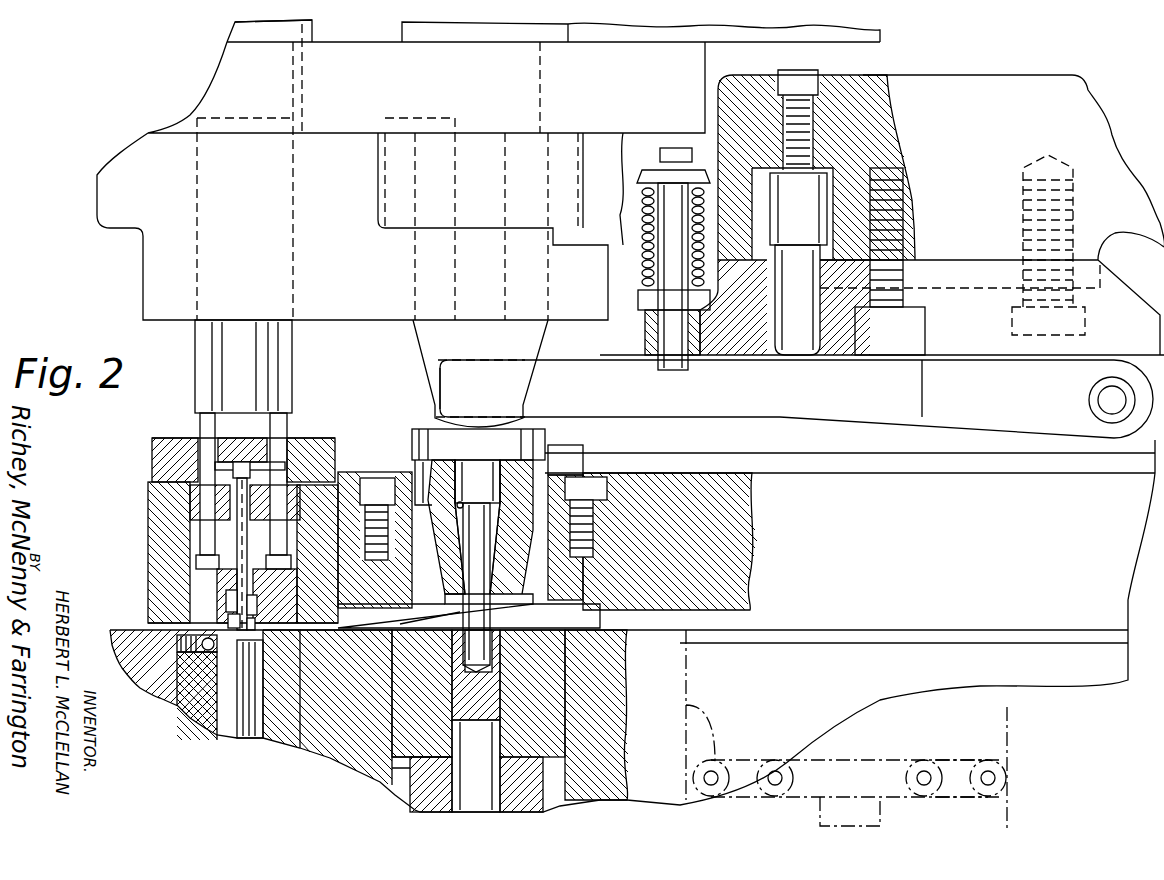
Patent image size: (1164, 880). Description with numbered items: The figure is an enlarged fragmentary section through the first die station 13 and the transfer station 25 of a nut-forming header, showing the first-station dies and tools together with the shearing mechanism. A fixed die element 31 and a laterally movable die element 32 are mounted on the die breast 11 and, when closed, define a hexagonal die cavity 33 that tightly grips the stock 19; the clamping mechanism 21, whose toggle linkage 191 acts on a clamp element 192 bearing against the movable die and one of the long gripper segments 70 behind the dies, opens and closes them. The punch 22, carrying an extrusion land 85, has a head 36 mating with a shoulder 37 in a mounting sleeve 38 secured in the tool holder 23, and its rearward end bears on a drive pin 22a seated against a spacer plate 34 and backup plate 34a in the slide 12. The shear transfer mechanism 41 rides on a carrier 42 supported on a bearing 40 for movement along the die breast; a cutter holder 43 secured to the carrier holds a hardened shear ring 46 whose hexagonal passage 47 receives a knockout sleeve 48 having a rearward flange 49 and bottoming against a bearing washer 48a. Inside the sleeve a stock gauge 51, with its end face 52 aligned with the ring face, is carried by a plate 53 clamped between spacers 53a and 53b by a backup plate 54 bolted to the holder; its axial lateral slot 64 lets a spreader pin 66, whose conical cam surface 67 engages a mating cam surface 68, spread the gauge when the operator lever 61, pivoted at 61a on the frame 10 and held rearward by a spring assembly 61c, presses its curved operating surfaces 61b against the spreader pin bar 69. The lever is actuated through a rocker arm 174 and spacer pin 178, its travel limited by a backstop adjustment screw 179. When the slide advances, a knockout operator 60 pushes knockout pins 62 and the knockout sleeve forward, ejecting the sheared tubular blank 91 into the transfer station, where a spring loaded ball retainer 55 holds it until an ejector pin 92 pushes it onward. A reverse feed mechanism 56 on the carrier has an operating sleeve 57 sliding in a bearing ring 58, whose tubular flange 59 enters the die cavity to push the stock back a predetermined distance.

The frame 10 is at (1088, 102).
The die breast 11 is at (120, 619).
The slide 12 is at (733, 50).
The first die station 13 is at (533, 625).
The stock 19 is at (470, 805).
The clamping mechanism 21 is at (875, 748).
The punch 22 is at (490, 546).
The drive pin 22a is at (470, 468).
The tool holder 23 is at (345, 308).
The transfer station 25 is at (300, 664).
The fixed die element 31 is at (425, 702).
The laterally movable die element 32 is at (540, 705).
The die cavity 33 is at (500, 654).
The spacer plate 34 is at (545, 78).
The backup plate 34a is at (505, 30).
The head 36 is at (502, 493).
The shoulder 37 is at (458, 508).
The mounting sleeve 38 is at (428, 355).
The bearing 40 is at (693, 462).
The shear transfer mechanism 41 is at (314, 429).
The carrier 42 is at (785, 484).
The cutter holder 43 is at (148, 538).
The shear ring 46 is at (338, 600).
The hexagonal cross-section passage 47 is at (257, 614).
The knockout sleeve 48 is at (275, 596).
The bearing washer 48a is at (280, 515).
The flange 49 is at (196, 570).
The stock gauge 51 is at (228, 626).
The end face 52 is at (258, 650).
The plate 53 is at (190, 494).
The spacer 53a is at (311, 460).
The spacer 53b is at (317, 554).
The backup plate 54 is at (336, 456).
The spring loaded ball retainer 55 is at (207, 652).
The reverse feed mechanism 56 is at (557, 443).
The operating sleeve 57 is at (568, 610).
The bearing ring 58 is at (556, 572).
The tubular flange 59 is at (458, 626).
The knockout operator 60 is at (283, 376).
The operator lever 61 is at (780, 404).
The pivot 61a is at (1098, 400).
The curved operating surface 61b is at (440, 426).
The spring assembly 61c is at (644, 271).
The knockout pins 62 is at (200, 426).
The lateral slot 64 is at (218, 586).
The spreader pin 66 is at (250, 536).
The conical cam surface 67 is at (256, 630).
The cam surface 68 is at (226, 606).
The spreader pin bar 69 is at (225, 444).
The gripper segments 70 is at (415, 808).
The extrusion land 85 is at (500, 672).
The tubular blank 91 is at (217, 690).
The ejector pin 92 is at (247, 738).
The rocker arm 174 is at (830, 185).
The spacer pin 178 is at (780, 322).
The backstop adjustment screw 179 is at (812, 130).
The toggle linkage 191 is at (918, 760).
The clamp element 192 is at (598, 800).